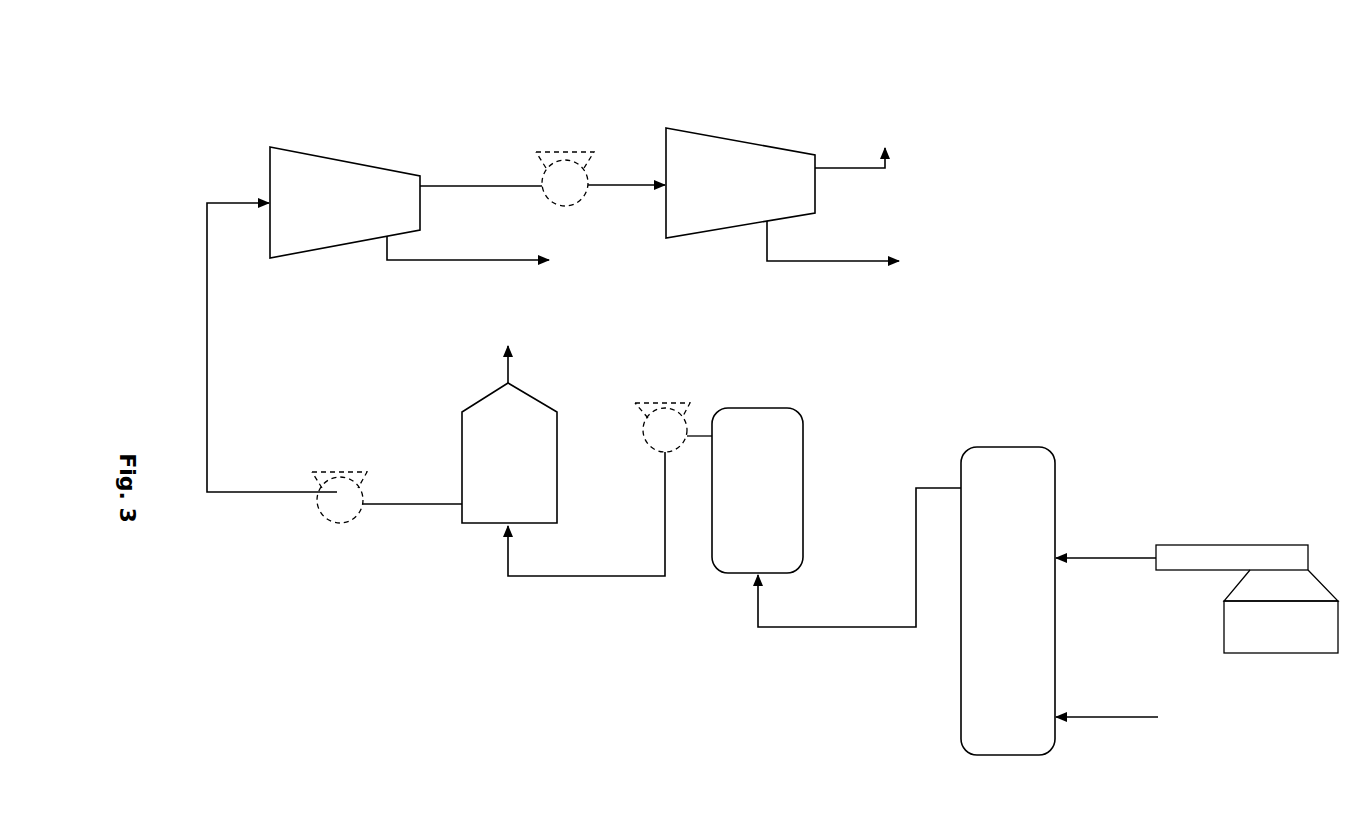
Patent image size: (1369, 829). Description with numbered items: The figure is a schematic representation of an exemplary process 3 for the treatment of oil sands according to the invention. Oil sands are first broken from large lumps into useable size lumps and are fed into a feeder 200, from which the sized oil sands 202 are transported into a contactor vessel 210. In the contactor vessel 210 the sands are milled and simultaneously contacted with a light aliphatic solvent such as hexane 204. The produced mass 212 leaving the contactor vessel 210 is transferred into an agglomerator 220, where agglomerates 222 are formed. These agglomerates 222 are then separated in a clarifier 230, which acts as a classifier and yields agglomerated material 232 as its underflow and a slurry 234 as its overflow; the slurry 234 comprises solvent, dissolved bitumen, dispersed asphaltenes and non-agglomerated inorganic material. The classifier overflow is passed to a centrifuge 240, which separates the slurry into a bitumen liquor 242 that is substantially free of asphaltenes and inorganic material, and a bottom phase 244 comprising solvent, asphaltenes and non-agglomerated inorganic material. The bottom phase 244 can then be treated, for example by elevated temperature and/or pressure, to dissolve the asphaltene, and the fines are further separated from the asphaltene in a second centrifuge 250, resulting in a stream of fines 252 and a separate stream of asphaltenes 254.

The process 3 is at (346, 699).
The feeder 200 is at (1298, 653).
The sized oil sands 202 is at (1106, 570).
The hexane 204 is at (1107, 730).
The contactor vessel 210 is at (1002, 748).
The produced mass 212 is at (859, 568).
The agglomerator 220 is at (803, 455).
The agglomerates 222 is at (586, 525).
The clarifier 230 is at (557, 468).
The agglomerated material 232 is at (530, 364).
The slurry 234 is at (412, 515).
The centrifuge 240 is at (343, 158).
The bitumen liquor 242 is at (468, 259).
The bottom phase 244 is at (481, 197).
The centrifuge 250 is at (692, 133).
The fines 252 is at (833, 253).
The asphaltenes 254 is at (859, 145).